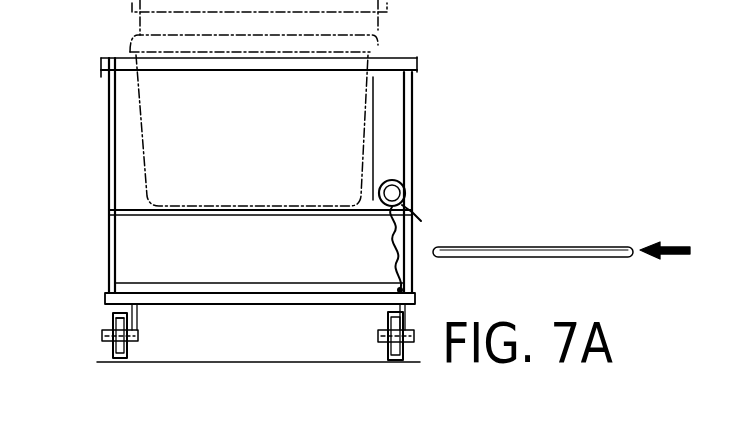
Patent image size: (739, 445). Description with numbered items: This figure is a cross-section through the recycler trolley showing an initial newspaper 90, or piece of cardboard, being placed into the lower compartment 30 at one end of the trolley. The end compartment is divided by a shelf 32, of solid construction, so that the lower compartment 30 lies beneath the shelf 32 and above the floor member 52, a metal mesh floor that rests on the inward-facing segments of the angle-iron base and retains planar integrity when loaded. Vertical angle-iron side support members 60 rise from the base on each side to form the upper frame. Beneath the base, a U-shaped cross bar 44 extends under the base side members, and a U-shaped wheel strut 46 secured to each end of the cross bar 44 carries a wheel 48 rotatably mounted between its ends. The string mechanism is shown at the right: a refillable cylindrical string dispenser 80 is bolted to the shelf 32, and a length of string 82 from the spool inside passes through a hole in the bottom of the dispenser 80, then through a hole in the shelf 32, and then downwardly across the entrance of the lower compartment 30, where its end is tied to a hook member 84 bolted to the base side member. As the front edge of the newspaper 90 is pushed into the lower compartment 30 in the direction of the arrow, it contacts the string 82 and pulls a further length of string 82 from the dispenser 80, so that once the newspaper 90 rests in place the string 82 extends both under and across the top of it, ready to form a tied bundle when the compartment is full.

The lower compartment 30 is at (150, 252).
The shelf 32 is at (143, 218).
The U-shaped cross bar 44 is at (335, 304).
The U-shaped wheel strut 46 is at (133, 313).
The wheel 48 is at (113, 348).
The floor member 52 is at (255, 285).
The side support member 60 is at (108, 108).
The string dispenser 80 is at (406, 180).
The string 82 is at (392, 240).
The hook member 84 is at (413, 287).
The newspaper 90 is at (531, 247).